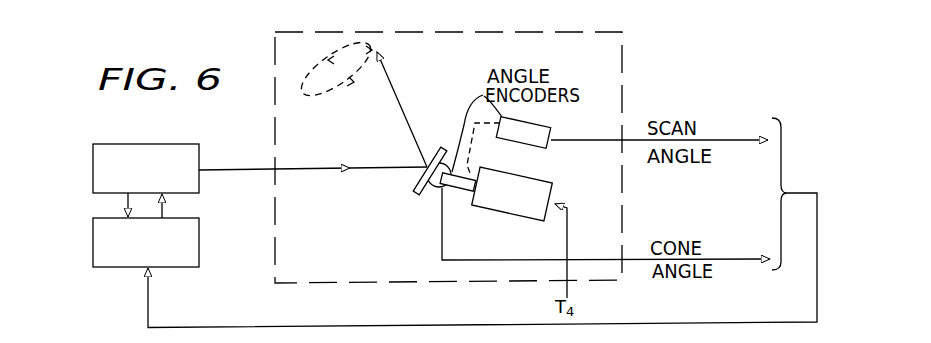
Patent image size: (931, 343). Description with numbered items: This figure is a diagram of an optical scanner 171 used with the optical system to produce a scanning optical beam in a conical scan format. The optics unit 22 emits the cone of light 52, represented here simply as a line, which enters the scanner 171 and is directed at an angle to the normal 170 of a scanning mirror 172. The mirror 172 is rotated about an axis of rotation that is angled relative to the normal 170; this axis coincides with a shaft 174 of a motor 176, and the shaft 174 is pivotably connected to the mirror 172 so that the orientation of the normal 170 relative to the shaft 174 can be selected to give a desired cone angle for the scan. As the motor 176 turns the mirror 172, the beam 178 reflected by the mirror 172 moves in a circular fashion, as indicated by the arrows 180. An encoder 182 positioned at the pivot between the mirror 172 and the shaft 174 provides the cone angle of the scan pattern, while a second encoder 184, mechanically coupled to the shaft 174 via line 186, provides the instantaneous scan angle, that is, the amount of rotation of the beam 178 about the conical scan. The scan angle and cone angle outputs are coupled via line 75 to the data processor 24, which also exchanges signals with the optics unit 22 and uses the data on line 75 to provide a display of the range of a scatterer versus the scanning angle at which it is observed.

The optics unit 22 is at (140, 144).
The data processor 24 is at (117, 267).
The cone of light 52 is at (217, 168).
The line 75 is at (705, 322).
The normal 170 is at (418, 161).
The scanner 171 is at (623, 75).
The scanning mirror 172 is at (413, 192).
The shaft 174 is at (466, 192).
The motor 176 is at (513, 211).
The beam 178 is at (398, 100).
The arrows 180 is at (329, 69).
The encoder 182 is at (437, 188).
The encoder 184 is at (545, 147).
The line 186 is at (472, 162).